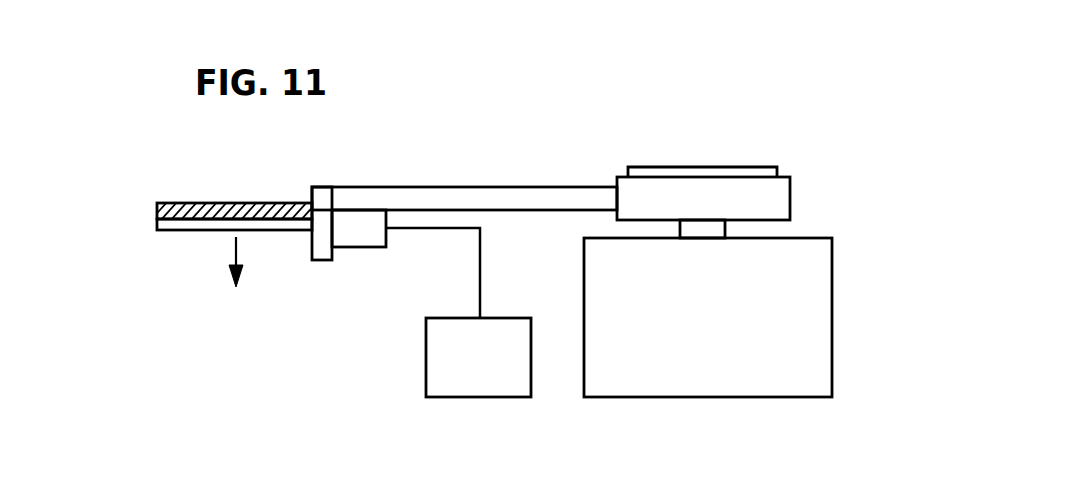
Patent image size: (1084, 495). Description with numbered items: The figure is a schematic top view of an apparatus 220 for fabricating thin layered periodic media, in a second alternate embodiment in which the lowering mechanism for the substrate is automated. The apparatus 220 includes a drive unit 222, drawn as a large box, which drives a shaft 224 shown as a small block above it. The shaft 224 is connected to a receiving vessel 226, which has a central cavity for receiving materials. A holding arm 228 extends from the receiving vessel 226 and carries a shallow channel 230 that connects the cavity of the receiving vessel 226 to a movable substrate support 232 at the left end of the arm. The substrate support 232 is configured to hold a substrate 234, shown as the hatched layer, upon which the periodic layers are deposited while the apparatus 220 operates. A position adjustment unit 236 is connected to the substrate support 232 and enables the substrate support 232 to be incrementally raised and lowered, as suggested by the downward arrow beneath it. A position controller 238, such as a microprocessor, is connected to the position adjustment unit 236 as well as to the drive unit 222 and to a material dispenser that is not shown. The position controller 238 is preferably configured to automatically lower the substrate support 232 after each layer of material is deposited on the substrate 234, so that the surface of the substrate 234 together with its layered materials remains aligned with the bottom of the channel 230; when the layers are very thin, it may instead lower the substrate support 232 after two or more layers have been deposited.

The apparatus 220 is at (573, 110).
The drive unit 222 is at (745, 397).
The shaft 224 is at (726, 228).
The receiving vessel 226 is at (790, 198).
The holding arm 228 is at (388, 185).
The shallow channel 230 is at (480, 210).
The substrate support 232 is at (192, 230).
The substrate 234 is at (208, 203).
The position adjustment unit 236 is at (360, 247).
The position controller 238 is at (423, 347).